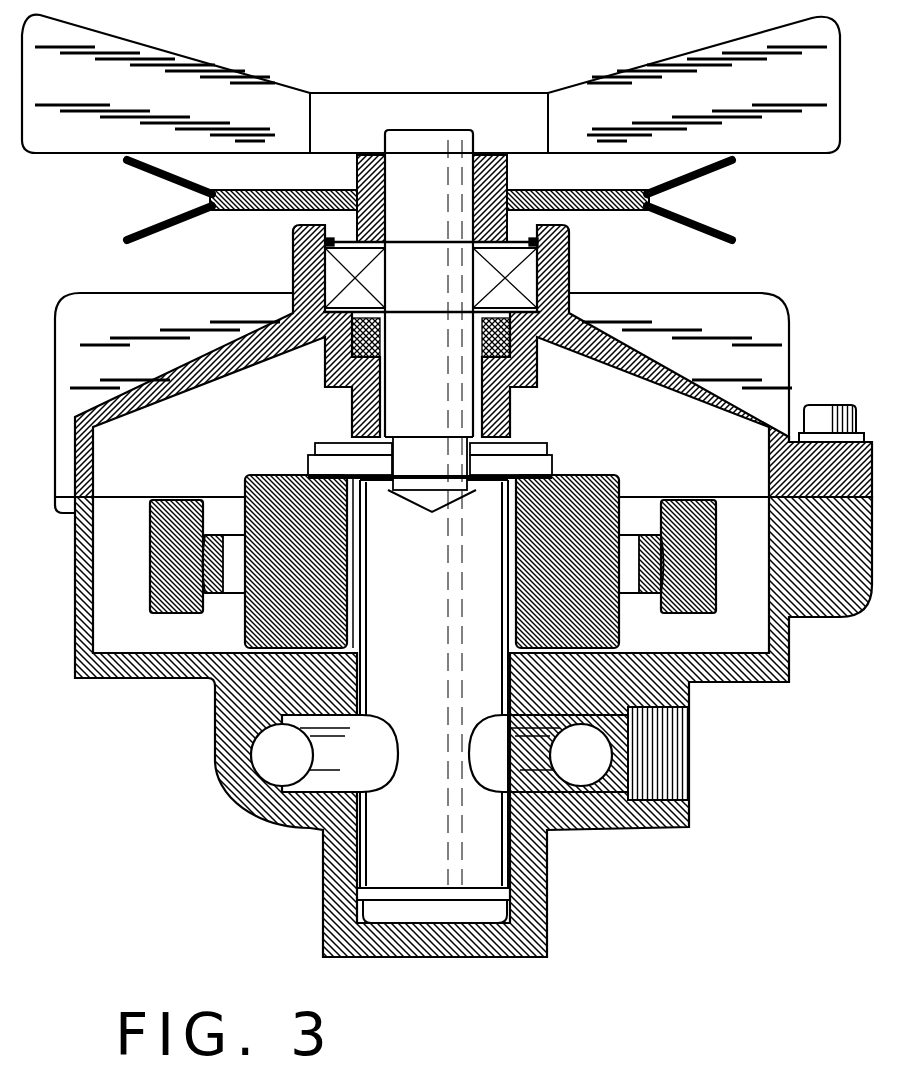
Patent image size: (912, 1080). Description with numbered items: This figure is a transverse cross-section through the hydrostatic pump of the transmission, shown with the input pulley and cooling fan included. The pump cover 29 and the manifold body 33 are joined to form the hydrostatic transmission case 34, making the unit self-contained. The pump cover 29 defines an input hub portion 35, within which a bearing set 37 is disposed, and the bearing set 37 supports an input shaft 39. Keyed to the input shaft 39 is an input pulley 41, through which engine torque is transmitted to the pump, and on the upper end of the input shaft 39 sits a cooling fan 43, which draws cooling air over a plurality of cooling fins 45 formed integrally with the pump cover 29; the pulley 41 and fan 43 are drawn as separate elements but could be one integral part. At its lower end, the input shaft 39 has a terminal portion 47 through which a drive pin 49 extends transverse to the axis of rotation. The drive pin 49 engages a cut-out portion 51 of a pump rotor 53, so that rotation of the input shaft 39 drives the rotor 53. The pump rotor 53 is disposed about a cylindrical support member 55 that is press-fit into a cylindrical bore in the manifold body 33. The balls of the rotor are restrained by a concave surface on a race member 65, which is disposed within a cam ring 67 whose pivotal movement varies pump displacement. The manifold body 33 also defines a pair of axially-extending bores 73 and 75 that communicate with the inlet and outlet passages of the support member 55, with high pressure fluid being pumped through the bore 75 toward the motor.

The pump cover 29 is at (686, 378).
The manifold body 33 is at (742, 683).
The hydrostatic transmission case 34 is at (35, 500).
The input hub portion 35 is at (570, 243).
The bearing set 37 is at (335, 276).
The input shaft 39 is at (420, 160).
The input pulley 41 is at (714, 238).
The cooling fan 43 is at (185, 90).
The cooling fins 45 is at (77, 341).
The terminal portion 47 is at (430, 470).
The drive pin 49 is at (540, 468).
The cut-out portion 51 is at (330, 445).
The pump rotor 53 is at (280, 505).
The cylindrical support member 55 is at (433, 701).
The race member 65 is at (637, 548).
The cam ring 67 is at (176, 512).
The axially-extending bore 73 is at (262, 770).
The axially-extending bore 75 is at (579, 773).